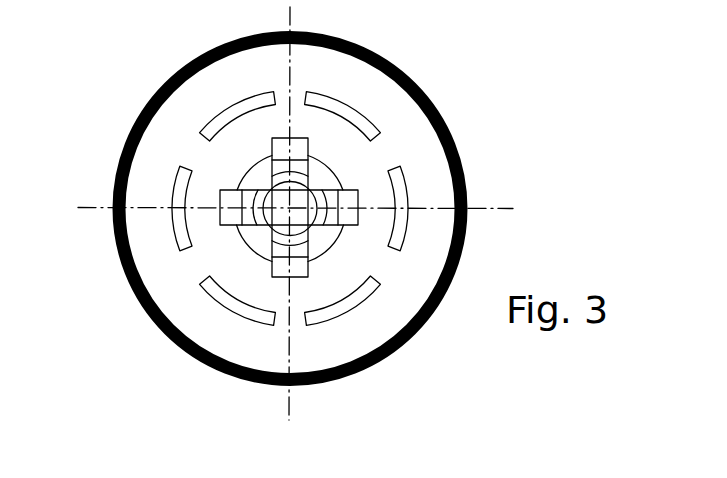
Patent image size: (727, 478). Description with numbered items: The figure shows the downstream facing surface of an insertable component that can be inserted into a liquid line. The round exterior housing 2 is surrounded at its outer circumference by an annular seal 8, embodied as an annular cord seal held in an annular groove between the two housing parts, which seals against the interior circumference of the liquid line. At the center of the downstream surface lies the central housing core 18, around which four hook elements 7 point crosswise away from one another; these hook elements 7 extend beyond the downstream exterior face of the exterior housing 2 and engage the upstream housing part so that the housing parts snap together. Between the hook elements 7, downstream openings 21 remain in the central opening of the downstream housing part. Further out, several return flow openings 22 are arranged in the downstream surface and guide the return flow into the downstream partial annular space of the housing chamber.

The exterior housing 2 is at (440, 171).
The annular seal 8 is at (471, 175).
The return flow openings 22 is at (404, 154).
The downstream openings 21 is at (260, 158).
The hook elements 7 is at (341, 232).
The central housing core 18 is at (301, 223).